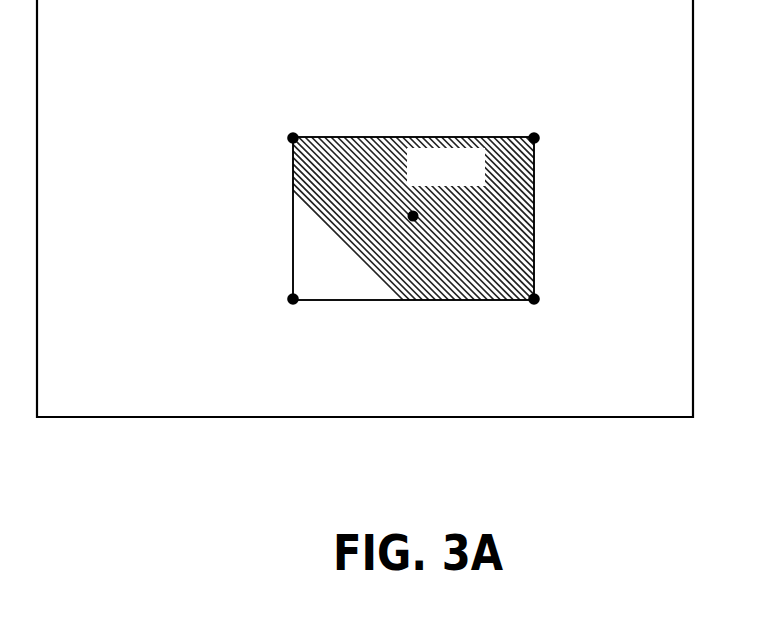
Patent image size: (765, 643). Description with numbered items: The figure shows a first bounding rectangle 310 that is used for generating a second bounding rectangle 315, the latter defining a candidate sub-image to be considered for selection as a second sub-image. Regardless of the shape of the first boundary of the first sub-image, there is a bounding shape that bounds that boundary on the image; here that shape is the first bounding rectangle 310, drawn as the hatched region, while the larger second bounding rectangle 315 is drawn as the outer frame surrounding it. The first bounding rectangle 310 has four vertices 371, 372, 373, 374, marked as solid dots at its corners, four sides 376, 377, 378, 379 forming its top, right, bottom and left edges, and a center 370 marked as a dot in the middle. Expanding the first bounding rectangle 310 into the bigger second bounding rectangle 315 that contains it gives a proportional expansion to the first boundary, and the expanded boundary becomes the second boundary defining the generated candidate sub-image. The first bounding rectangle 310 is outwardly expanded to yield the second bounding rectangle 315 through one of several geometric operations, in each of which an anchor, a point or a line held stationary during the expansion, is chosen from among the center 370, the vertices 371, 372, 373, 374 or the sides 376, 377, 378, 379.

The first bounding rectangle 310 is at (353, 280).
The second bounding rectangle 315 is at (112, 388).
The center 370 is at (413, 211).
The vertex 371 is at (291, 137).
The vertex 372 is at (536, 137).
The vertex 373 is at (541, 304).
The vertex 374 is at (288, 302).
The side 376 is at (337, 137).
The side 377 is at (535, 223).
The side 378 is at (412, 302).
The side 379 is at (293, 220).